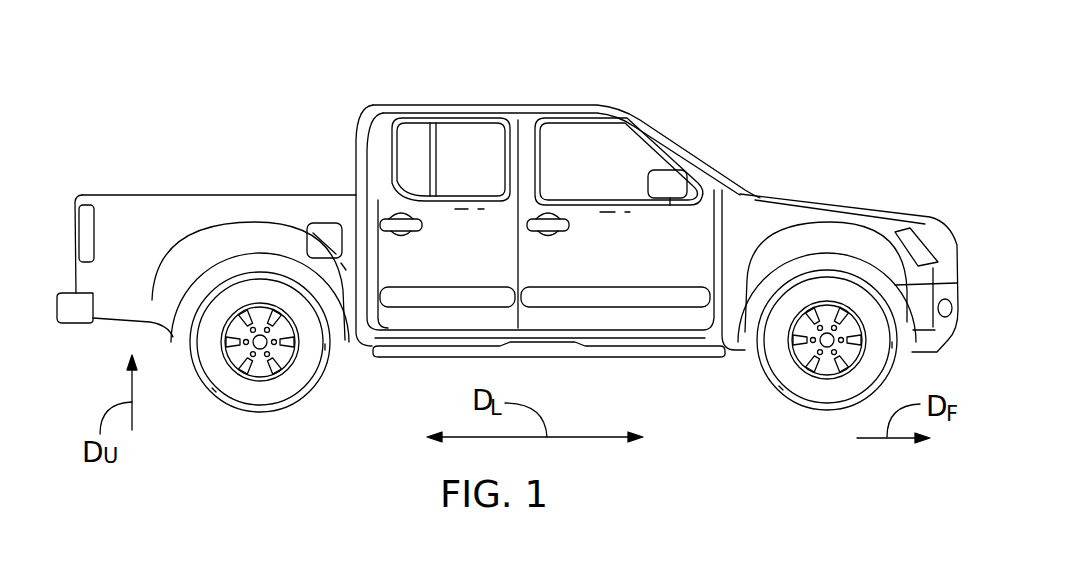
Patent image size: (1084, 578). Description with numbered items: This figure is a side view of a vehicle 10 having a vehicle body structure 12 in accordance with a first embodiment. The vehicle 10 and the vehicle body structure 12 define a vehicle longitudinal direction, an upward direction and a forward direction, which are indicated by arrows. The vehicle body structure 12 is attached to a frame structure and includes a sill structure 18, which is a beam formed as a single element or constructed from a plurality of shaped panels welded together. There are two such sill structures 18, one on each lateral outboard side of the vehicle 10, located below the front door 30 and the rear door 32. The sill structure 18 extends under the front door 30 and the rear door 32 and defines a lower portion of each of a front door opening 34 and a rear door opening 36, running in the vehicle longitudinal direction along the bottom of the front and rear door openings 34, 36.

The vehicle 10 is at (236, 64).
The vehicle body structure 12 is at (438, 92).
The sill structure 18 is at (700, 337).
The front door 30 is at (627, 262).
The rear door 32 is at (450, 262).
The front door opening 34 is at (630, 125).
The rear door opening 36 is at (468, 113).